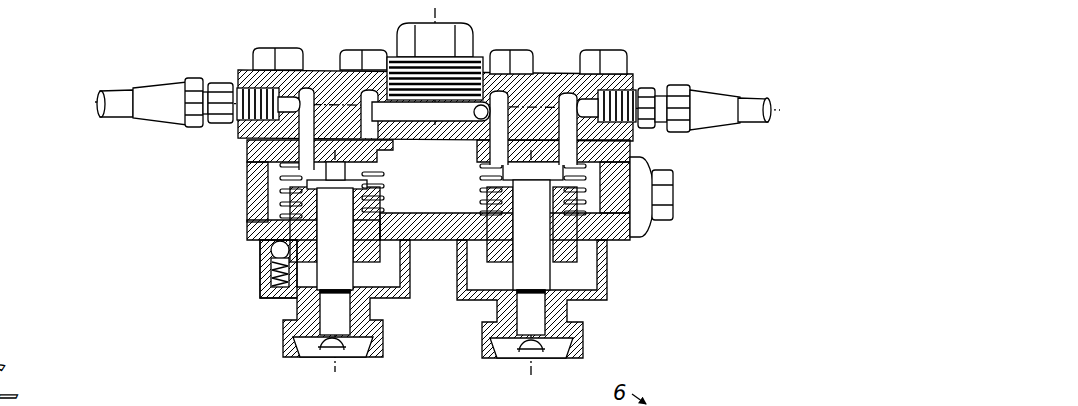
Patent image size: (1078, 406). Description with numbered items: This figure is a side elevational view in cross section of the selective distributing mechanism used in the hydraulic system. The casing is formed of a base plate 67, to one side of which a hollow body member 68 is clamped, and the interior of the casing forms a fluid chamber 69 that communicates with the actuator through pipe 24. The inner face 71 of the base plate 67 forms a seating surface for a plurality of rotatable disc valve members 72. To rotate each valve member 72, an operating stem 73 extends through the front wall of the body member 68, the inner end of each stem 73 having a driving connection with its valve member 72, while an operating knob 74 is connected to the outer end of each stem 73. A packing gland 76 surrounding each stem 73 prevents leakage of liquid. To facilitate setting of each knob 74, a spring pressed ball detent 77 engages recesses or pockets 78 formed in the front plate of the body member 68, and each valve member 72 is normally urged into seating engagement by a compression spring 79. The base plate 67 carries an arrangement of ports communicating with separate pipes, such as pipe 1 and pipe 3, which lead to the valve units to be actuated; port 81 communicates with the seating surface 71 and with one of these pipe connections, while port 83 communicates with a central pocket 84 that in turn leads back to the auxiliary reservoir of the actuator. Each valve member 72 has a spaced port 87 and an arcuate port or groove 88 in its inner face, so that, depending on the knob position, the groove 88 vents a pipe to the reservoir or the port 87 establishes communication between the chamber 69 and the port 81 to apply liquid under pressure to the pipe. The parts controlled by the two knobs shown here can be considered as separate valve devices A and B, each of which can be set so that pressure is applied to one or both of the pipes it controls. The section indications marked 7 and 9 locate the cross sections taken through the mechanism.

The pipe 1 is at (752, 101).
The pipe 3 is at (110, 90).
The section line 7- 7 is at (240, 187).
The section line 9- 9 is at (233, 92).
The pipe 24 is at (672, 212).
The base plate 67 is at (540, 82).
The hollow body member 68 is at (247, 212).
The fluid chamber 69 is at (453, 215).
The inner face 71 is at (427, 128).
The rotatable disc valve member 72 is at (277, 154).
The operating stem 73 is at (343, 270).
The operating knob 74 is at (383, 338).
The packing gland 76 is at (363, 208).
The spring pressed ball detent 77 is at (273, 249).
The recesses or pockets 78 is at (258, 237).
The compression spring 79 is at (287, 190).
The port 81 is at (307, 95).
The port 83 is at (373, 62).
The central pocket 84 is at (478, 118).
The port 87 is at (297, 143).
The arcuate port or groove 88 is at (377, 152).
The valve device A is at (607, 298).
The valve device B is at (410, 296).